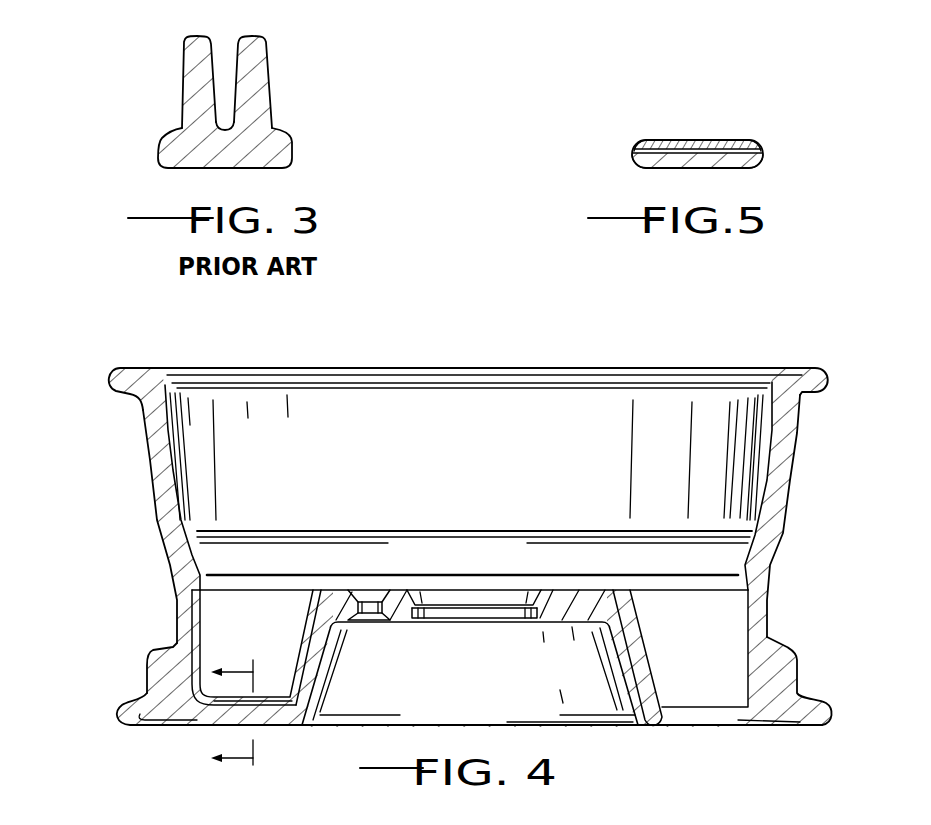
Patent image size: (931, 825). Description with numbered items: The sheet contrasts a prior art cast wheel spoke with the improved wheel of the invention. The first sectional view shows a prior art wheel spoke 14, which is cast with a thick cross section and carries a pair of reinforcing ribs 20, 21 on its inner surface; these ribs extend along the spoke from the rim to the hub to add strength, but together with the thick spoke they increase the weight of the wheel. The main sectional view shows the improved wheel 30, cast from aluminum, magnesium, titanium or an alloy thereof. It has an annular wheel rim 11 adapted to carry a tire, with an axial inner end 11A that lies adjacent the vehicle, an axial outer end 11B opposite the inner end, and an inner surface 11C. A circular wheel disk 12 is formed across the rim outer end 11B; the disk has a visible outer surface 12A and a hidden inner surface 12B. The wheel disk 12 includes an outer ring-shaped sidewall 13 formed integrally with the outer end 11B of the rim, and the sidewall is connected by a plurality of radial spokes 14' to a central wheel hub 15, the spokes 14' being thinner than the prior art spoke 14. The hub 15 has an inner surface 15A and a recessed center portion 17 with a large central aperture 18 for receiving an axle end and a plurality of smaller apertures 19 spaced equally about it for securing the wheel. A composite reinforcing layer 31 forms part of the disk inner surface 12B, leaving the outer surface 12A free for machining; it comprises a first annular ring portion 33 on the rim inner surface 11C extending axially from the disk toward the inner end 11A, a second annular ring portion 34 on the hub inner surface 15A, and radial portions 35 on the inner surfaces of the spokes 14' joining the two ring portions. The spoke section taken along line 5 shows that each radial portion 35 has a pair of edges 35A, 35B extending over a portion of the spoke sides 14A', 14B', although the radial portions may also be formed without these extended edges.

In FIG. 4, the section line 5- 5 is at (232, 717).
In FIG. 4, the wheel rim 11 is at (153, 493).
In FIG. 4, the axial inner end 11A is at (112, 370).
In FIG. 4, the axial outer end 11B is at (120, 712).
In FIG. 4, the inner surface 11C is at (177, 483).
In FIG. 4, the wheel disk 12 is at (613, 738).
In FIG. 4, the outer surface 12A is at (213, 723).
In FIG. 4, the inner surface 12B is at (290, 703).
In FIG. 4, the outer ring-shaped sidewall 13 is at (165, 712).
In FIG. 3, the wheel spoke 14 is at (264, 145).
In FIG. 5, the radial spoke 14' is at (732, 175).
In FIG. 4, the radial spoke 14' is at (278, 757).
In FIG. 5, the side of the wheel spoke 14A' is at (577, 174).
In FIG. 5, the side of the wheel spoke 14B' is at (818, 158).
In FIG. 4, the central wheel hub 15 is at (482, 698).
In FIG. 4, the inner surface 15A is at (302, 590).
In FIG. 4, the recessed center portion 17 is at (578, 622).
In FIG. 4, the central aperture 18 is at (467, 622).
In FIG. 4, the smaller apertures 19 is at (368, 622).
In FIG. 3, the reinforcing rib 20 is at (193, 55).
In FIG. 3, the reinforcing rib 21 is at (253, 52).
In FIG. 4, the improved wheel 30 is at (673, 350).
In FIG. 4, the composite reinforcing layer 31 is at (256, 590).
In FIG. 4, the first annular ring portion 33 is at (235, 600).
In FIG. 4, the second annular ring portion 34 is at (303, 643).
In FIG. 5, the radial portions 35 is at (680, 140).
In FIG. 4, the radial portions 35 is at (285, 700).
In FIG. 5, the edge 35A is at (633, 150).
In FIG. 5, the edge 35B is at (758, 148).